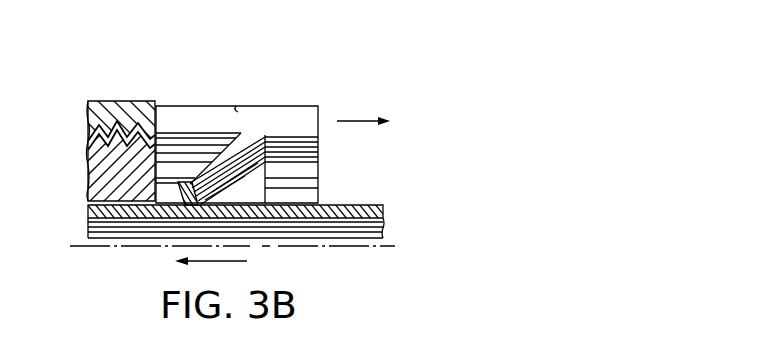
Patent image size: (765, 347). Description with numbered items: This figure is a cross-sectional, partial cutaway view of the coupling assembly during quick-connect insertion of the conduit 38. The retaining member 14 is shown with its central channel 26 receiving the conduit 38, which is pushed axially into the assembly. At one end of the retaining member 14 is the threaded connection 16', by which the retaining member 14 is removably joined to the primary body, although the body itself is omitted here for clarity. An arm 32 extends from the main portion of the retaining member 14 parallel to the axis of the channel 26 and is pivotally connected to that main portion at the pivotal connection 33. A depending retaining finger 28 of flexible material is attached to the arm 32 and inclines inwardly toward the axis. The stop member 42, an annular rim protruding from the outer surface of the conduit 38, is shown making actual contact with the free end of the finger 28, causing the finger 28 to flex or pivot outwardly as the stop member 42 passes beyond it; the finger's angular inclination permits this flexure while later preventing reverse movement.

The retaining member 14 is at (320, 93).
The threaded connection 16' is at (121, 150).
The central channel 26 is at (305, 178).
The retaining finger 28 is at (232, 172).
The arm 32 is at (286, 106).
The pivotal connection 33 is at (236, 105).
The conduit 38 is at (353, 205).
The stop member 42 is at (178, 196).